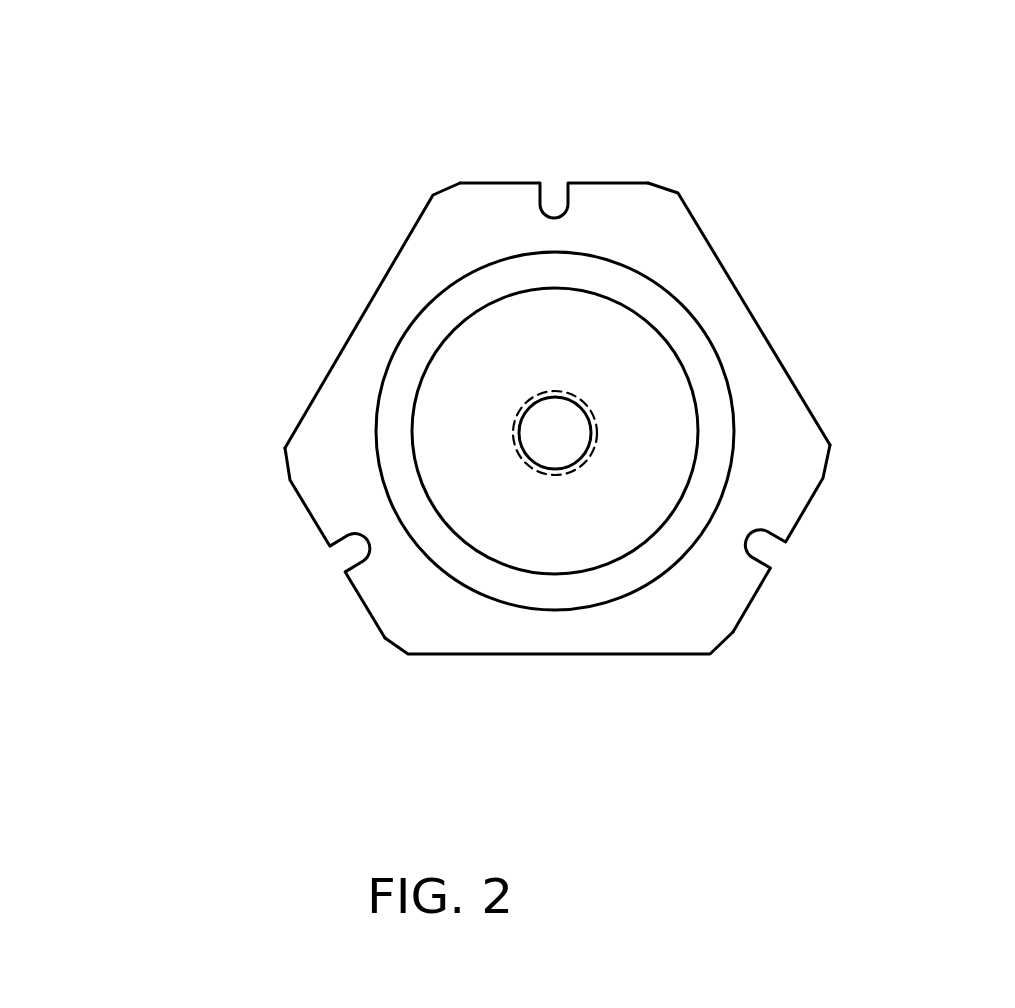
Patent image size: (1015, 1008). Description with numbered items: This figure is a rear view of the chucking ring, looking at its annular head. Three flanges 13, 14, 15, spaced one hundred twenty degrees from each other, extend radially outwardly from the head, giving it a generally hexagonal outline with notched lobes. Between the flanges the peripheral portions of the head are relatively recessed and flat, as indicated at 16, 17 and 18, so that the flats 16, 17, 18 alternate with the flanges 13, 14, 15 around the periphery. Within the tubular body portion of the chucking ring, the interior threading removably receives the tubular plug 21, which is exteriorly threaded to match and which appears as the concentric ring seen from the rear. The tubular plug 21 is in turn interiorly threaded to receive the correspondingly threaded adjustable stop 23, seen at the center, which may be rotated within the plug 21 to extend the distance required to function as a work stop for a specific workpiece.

The flange 13 is at (297, 495).
The flange 14 is at (812, 502).
The flange 15 is at (600, 183).
The flat peripheral portion 16 is at (638, 654).
The flat peripheral portion 17 is at (402, 248).
The flat peripheral portion 18 is at (750, 307).
The tubular plug 21 is at (695, 383).
The adjustable stop 23 is at (517, 420).